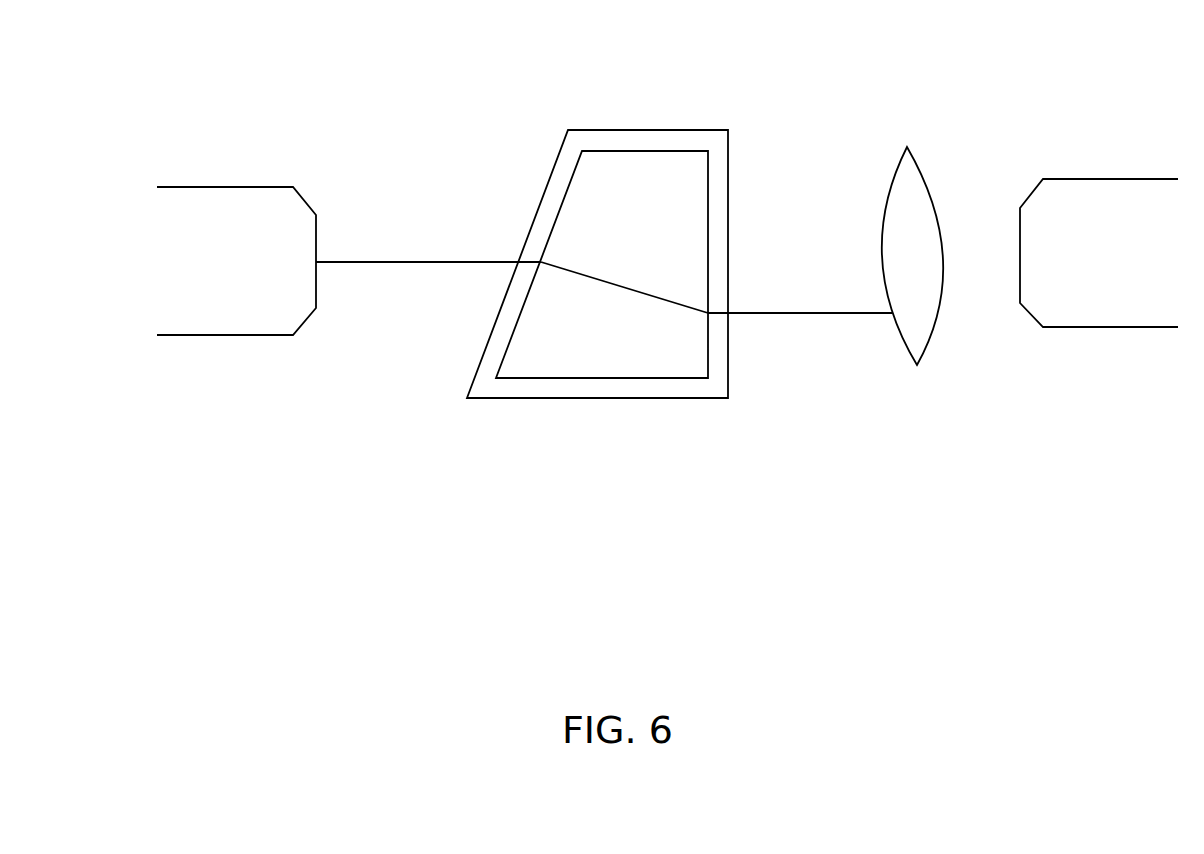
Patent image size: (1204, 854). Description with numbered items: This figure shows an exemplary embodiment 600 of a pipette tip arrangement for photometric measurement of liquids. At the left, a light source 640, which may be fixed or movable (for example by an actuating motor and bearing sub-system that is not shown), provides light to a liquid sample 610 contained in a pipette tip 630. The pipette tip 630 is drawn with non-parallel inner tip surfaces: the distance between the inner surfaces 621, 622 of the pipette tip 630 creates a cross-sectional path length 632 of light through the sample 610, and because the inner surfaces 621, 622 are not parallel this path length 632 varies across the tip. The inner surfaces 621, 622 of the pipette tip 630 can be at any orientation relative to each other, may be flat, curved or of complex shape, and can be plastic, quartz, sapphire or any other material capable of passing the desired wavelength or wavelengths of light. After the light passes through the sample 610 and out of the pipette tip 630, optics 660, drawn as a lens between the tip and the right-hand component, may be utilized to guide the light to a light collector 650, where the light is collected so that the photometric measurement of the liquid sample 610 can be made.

The exemplary embodiment 600 is at (535, 75).
The liquid sample 610 is at (667, 178).
The inner surface 621 is at (520, 313).
The inner surface 622 is at (708, 331).
The pipette tip 630 is at (729, 395).
The cross-sectional path length 632 is at (628, 285).
The light source 640 is at (227, 315).
The light collector 650 is at (1126, 307).
The optics 660 is at (917, 177).